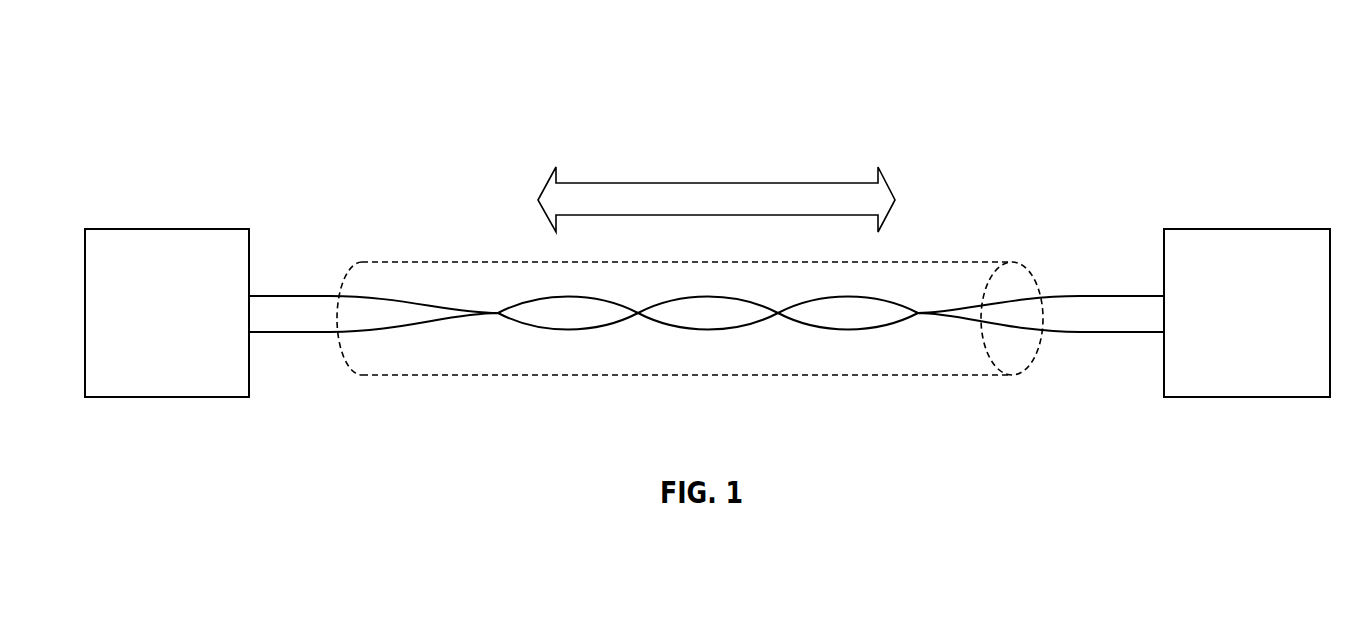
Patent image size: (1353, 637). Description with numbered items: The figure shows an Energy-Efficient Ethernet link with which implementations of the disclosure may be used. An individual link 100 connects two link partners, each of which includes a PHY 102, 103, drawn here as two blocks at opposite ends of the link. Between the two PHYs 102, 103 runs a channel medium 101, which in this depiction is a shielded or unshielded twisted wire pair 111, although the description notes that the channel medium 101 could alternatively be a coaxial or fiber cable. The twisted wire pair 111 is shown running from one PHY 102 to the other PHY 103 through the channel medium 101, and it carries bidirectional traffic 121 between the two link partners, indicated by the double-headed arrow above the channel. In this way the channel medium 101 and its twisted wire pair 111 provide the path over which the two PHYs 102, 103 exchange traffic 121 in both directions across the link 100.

The link 100 is at (166, 68).
The channel medium 101 is at (412, 262).
The PHY 102 is at (160, 229).
The PHY 103 is at (1240, 229).
The twisted wire pair 111 is at (1087, 295).
The bidirectional traffic 121 is at (538, 200).